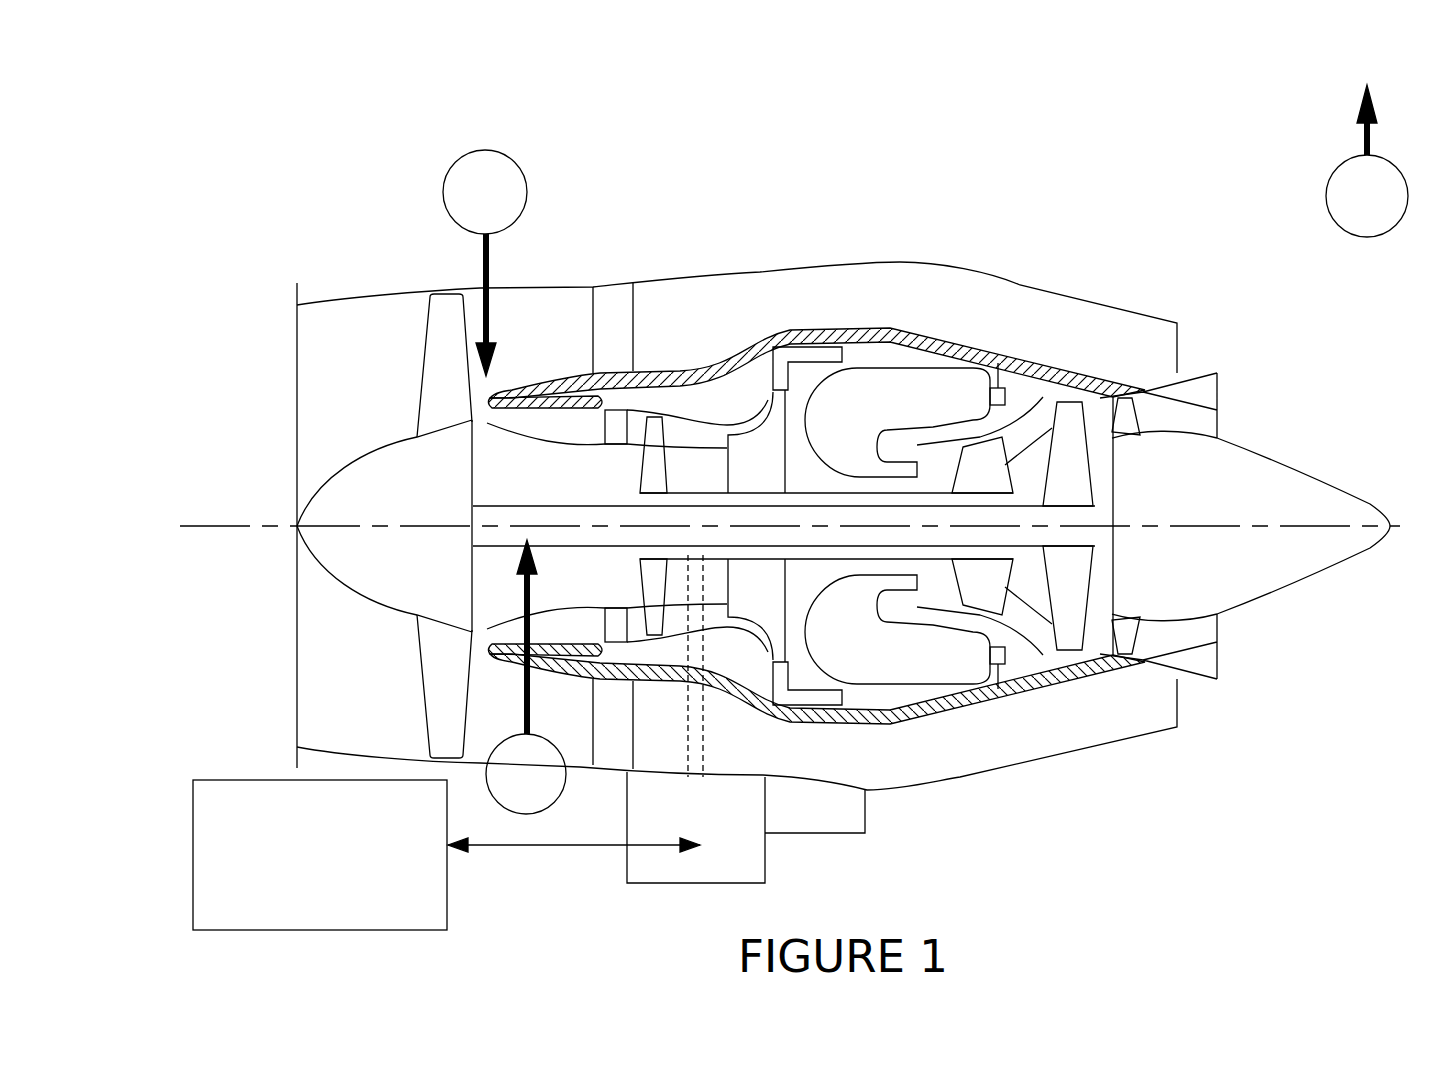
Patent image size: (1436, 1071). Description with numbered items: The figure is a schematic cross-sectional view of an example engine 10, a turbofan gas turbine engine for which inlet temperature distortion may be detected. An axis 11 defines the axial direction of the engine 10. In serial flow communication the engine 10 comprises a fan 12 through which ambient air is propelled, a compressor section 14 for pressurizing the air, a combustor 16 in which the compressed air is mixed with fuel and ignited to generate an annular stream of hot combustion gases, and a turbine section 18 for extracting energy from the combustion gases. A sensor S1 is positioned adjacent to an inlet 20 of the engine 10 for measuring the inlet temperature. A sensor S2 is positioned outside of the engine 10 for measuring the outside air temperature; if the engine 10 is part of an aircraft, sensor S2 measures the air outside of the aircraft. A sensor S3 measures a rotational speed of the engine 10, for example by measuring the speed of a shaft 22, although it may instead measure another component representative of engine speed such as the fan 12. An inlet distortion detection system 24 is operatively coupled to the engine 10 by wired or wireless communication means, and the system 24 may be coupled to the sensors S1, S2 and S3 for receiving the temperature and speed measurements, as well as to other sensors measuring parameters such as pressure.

The engine 10 is at (1044, 216).
The axis 11 is at (210, 526).
The fan 12 is at (437, 673).
The compressor section 14 is at (687, 427).
The combustor 16 is at (898, 388).
The turbine section 18 is at (1030, 590).
The inlet 20 is at (497, 413).
The shaft 22 is at (582, 502).
The inlet distortion detection system 24 is at (200, 780).
The sensor S1 is at (485, 263).
The sensor S2 is at (1367, 146).
The sensor S3 is at (526, 677).